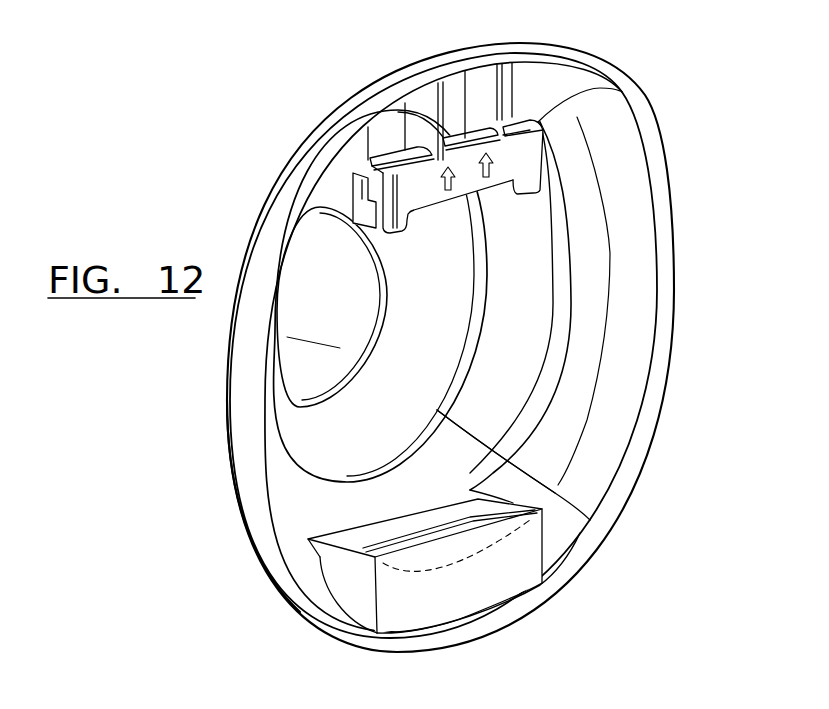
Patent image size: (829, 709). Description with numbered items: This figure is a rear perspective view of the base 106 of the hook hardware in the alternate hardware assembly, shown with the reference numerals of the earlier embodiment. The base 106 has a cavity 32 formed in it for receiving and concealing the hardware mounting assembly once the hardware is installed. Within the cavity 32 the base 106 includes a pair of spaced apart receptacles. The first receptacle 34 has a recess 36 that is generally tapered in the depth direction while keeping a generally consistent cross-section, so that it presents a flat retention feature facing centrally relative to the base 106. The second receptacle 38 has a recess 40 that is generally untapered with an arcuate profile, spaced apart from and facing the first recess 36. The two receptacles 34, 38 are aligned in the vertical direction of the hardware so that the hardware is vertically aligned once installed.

The cavity 32 is at (641, 263).
The first receptacle 34 is at (538, 152).
The recess 36 is at (362, 182).
The second receptacle 38 is at (545, 543).
The recess 40 is at (513, 503).
The base 106 is at (236, 484).